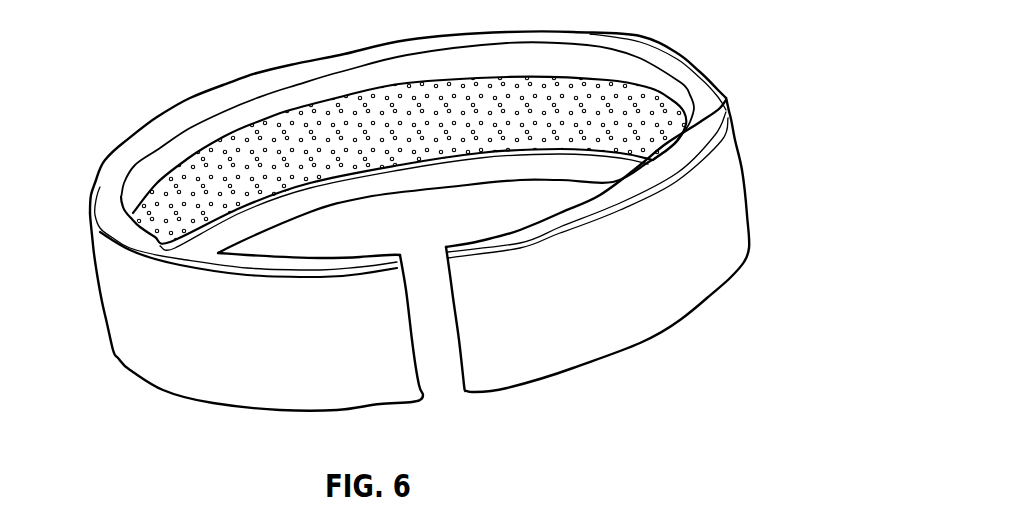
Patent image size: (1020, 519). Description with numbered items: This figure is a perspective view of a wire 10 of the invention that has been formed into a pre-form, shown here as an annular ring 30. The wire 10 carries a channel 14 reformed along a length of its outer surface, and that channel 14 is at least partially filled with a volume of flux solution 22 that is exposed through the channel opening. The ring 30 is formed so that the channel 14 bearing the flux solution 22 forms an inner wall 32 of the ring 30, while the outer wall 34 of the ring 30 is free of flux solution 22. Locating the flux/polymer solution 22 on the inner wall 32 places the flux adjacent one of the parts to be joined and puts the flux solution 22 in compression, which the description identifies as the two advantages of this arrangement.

The wire 10 is at (89, 101).
The channel 14 is at (722, 108).
The flux solution 22 is at (645, 100).
The annular ring 30 is at (113, 290).
The inner wall 32 is at (548, 62).
The outer wall 34 is at (642, 322).